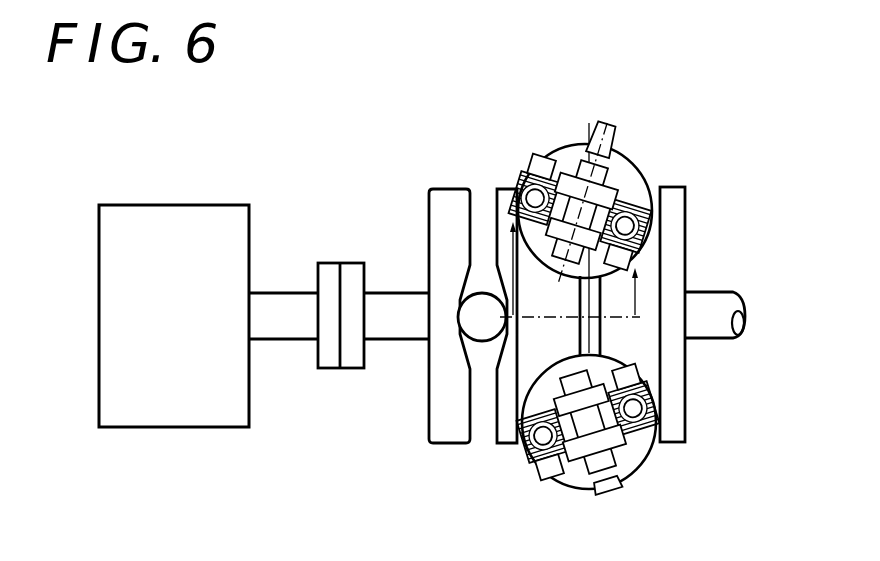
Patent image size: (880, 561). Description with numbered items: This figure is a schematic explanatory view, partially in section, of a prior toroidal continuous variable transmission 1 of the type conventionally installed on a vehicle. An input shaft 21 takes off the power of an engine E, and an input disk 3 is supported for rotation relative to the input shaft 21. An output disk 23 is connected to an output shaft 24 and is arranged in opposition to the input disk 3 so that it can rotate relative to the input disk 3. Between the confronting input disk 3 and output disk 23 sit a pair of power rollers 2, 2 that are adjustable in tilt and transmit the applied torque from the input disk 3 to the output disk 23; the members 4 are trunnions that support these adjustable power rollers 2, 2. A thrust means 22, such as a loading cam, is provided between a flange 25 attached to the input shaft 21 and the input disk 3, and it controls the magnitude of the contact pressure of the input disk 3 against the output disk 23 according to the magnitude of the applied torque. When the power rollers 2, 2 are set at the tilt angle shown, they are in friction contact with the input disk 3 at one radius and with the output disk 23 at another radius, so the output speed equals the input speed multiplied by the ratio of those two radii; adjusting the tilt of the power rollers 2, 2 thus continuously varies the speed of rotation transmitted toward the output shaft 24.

The engine E is at (186, 247).
The toroidal continuous variable transmission 1 is at (622, 300).
The power roller 2 is at (518, 200).
The input disk 3 is at (508, 390).
The trunnion 4 is at (582, 307).
The input shaft 21 is at (396, 310).
The thrust means 22 is at (475, 322).
The output disk 23 is at (667, 260).
The output shaft 24 is at (713, 312).
The flange 25 is at (443, 420).